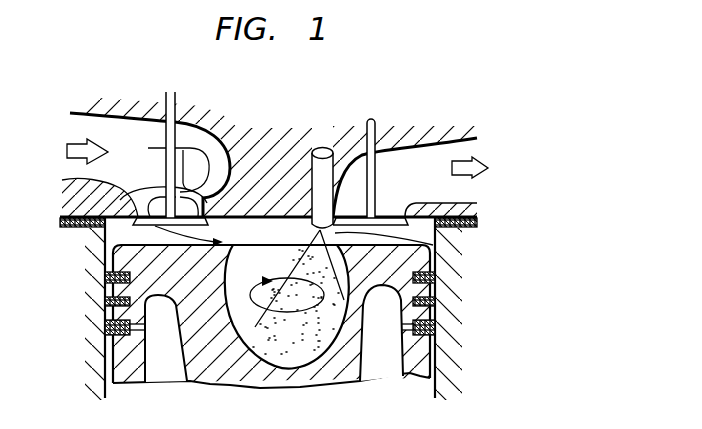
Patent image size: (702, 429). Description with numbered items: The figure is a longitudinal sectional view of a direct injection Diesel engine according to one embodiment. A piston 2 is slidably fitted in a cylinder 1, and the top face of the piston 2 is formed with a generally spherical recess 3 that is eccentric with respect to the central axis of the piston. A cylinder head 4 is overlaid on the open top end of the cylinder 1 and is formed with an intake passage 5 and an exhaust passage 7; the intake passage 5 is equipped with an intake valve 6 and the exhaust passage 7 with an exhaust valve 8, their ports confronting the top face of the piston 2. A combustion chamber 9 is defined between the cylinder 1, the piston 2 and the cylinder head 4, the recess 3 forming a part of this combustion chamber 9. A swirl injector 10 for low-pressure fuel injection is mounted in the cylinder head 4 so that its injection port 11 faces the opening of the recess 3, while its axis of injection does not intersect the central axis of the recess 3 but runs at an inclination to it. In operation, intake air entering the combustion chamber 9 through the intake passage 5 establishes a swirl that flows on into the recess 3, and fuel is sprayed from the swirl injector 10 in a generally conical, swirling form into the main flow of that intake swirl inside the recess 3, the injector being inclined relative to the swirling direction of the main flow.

The cylinder 1 is at (98, 313).
The piston 2 is at (113, 260).
The recess 3 is at (362, 290).
The cylinder head 4 is at (78, 202).
The intake passage 5 is at (118, 127).
The intake valve 6 is at (195, 217).
The exhaust passage 7 is at (441, 147).
The exhaust valve 8 is at (388, 217).
The combustion chamber 9 is at (259, 230).
The swirl injector 10 is at (321, 146).
The injection port 11 is at (433, 245).